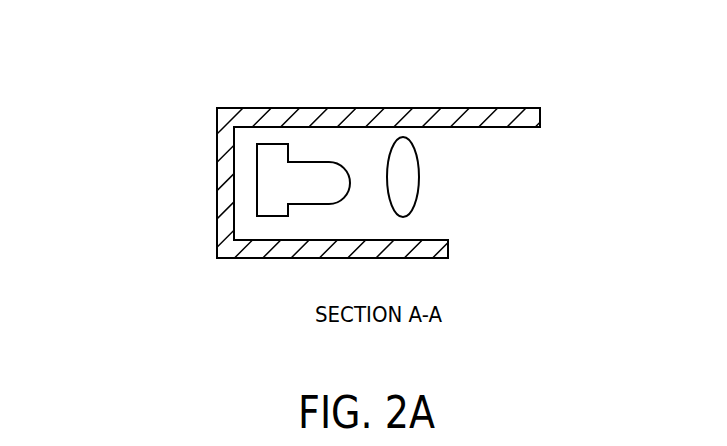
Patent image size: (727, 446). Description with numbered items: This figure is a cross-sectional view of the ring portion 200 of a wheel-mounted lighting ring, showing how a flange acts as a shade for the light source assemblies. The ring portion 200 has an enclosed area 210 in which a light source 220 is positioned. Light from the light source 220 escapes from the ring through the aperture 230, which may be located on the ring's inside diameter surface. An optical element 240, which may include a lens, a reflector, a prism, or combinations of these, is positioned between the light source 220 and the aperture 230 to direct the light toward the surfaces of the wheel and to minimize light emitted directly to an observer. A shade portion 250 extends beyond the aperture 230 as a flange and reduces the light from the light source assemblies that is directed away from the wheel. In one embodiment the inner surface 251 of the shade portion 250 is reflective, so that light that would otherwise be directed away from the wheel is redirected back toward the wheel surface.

The ring portion 200 is at (217, 157).
The enclosed area 210 is at (440, 164).
The light source 220 is at (317, 182).
The aperture 230 is at (475, 238).
The optical element 240 is at (402, 187).
The shade portion 250 is at (457, 110).
The inner surface of the shade portion 251 is at (517, 132).